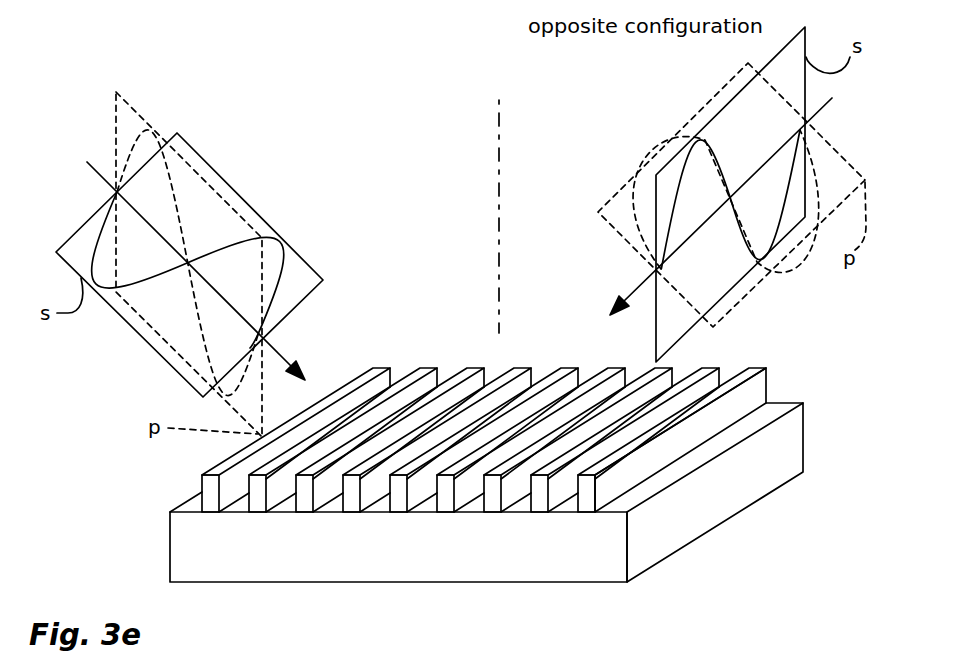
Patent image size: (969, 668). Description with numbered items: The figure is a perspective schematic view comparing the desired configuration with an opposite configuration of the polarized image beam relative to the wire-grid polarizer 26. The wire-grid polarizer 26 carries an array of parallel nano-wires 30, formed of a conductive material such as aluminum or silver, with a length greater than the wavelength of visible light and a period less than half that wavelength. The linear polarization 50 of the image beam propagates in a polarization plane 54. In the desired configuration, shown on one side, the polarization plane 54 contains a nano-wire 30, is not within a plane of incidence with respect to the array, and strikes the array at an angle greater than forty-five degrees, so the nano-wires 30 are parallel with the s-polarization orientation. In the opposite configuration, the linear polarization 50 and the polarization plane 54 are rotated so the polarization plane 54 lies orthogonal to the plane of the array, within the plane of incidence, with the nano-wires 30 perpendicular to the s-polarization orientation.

The polarization plane 54 is at (208, 165).
The linear polarization 50 is at (287, 244).
The nano-wires 30 is at (767, 387).
The wire-grid polarizer 26 is at (747, 508).